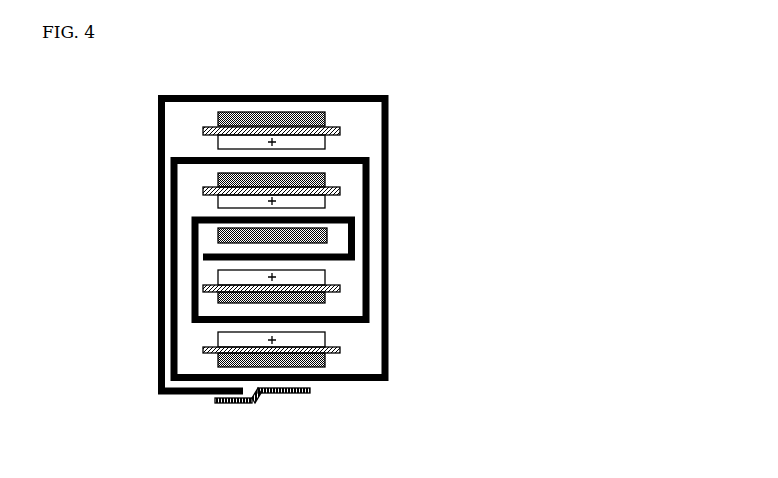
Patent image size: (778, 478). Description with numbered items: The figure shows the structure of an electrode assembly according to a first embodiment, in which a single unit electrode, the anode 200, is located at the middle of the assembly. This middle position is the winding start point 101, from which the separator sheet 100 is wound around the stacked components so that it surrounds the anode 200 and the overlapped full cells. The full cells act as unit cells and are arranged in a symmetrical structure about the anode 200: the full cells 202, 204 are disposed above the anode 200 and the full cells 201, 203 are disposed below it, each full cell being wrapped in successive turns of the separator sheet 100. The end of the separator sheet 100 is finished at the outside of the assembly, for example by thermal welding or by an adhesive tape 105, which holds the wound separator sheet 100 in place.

The separator sheet 100 is at (158, 178).
The winding start point 101 is at (205, 257).
The adhesive tape 105 is at (260, 394).
The anode 200 is at (327, 236).
The full cell 201 is at (325, 300).
The full cell 202 is at (325, 180).
The full cell 203 is at (325, 359).
The full cell 204 is at (325, 119).